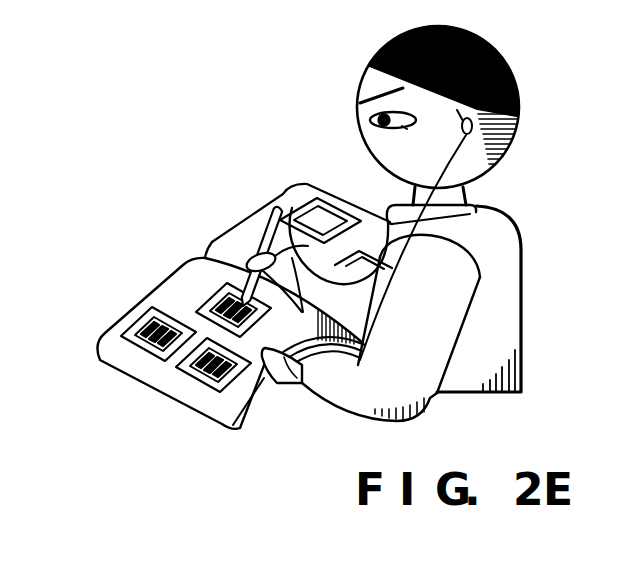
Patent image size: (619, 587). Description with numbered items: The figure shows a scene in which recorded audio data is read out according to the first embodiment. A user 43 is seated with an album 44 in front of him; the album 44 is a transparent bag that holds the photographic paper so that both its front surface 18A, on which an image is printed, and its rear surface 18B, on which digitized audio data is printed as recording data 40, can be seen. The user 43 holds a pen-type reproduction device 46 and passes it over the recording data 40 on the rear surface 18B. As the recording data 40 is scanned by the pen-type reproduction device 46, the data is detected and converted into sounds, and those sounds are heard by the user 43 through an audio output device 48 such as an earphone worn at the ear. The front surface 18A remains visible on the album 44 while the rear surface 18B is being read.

The front surface 18A is at (323, 217).
The rear surface 18B is at (117, 327).
The recording data 40 is at (217, 315).
The user 43 is at (420, 215).
The album 44 is at (157, 377).
The pen-type reproduction device 46 is at (260, 237).
The audio output device 48 is at (470, 134).